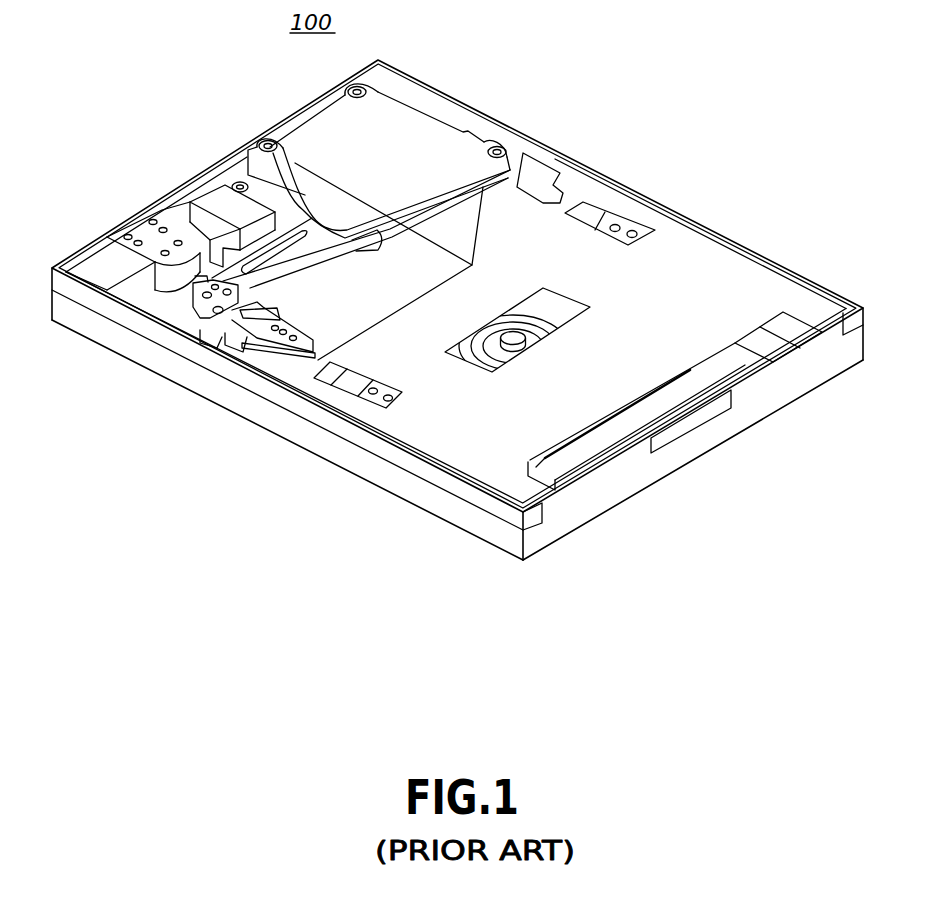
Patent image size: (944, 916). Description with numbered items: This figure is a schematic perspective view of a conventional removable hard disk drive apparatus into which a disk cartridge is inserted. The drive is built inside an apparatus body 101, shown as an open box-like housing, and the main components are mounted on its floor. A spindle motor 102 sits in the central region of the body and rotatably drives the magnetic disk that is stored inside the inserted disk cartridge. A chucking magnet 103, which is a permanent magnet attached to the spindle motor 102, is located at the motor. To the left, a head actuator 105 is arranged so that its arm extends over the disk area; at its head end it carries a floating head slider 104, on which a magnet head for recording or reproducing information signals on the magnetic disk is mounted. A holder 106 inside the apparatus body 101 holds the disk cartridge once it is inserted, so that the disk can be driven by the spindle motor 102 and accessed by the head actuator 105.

The apparatus body 101 is at (723, 240).
The spindle motor 102 is at (510, 335).
The chucking magnet 103 is at (490, 320).
The floating head slider 104 is at (308, 355).
The head actuator 105 is at (270, 240).
The holder 106 is at (463, 436).